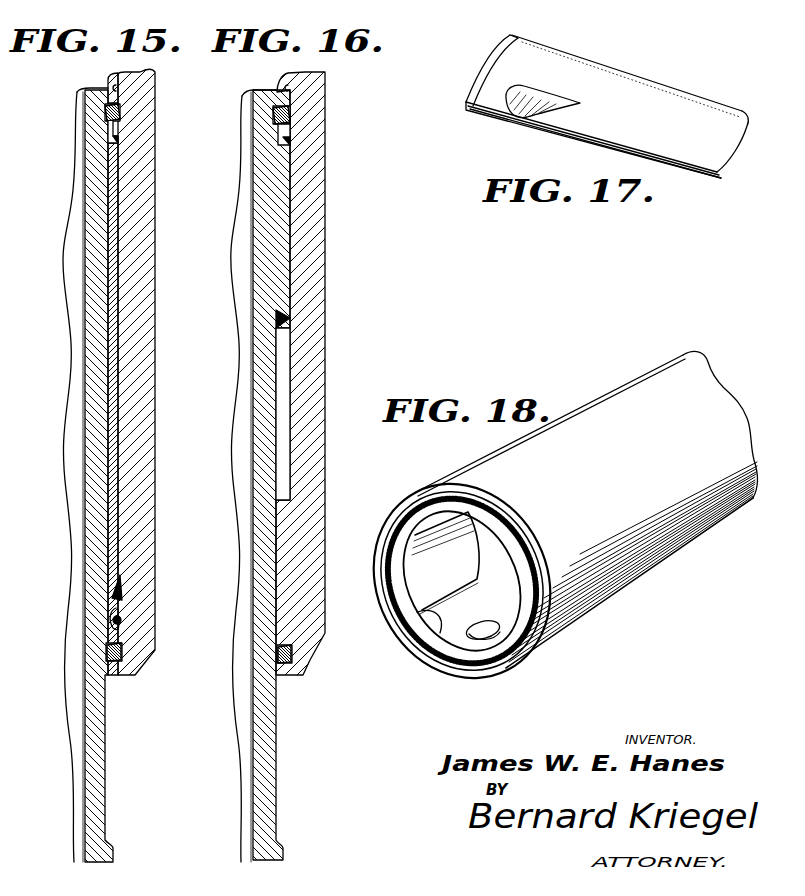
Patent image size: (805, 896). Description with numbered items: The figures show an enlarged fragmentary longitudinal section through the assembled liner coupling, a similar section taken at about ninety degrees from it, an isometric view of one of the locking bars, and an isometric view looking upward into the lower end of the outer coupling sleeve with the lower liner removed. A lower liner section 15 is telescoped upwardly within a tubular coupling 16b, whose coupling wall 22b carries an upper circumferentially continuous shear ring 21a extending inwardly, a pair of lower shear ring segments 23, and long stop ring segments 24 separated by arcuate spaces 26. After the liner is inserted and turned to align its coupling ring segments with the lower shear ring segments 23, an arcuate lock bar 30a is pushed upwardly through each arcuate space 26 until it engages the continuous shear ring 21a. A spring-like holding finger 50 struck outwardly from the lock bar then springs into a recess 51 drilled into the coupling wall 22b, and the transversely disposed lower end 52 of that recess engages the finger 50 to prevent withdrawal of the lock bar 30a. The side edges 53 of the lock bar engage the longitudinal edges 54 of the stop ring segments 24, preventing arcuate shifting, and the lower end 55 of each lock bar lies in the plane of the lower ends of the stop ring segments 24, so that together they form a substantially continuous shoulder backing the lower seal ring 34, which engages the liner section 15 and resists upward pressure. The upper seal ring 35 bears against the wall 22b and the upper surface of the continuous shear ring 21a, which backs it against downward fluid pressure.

In FIG. 15, the lower liner section 15 is at (100, 733).
In FIG. 16, the lower liner section 15 is at (276, 741).
In FIG. 15, the tubular coupling 16b is at (148, 266).
In FIG. 16, the tubular coupling 16b is at (318, 318).
In FIG. 18, the tubular coupling 16b is at (625, 395).
In FIG. 15, the upper circumferentially continuous shear ring 21a is at (112, 133).
In FIG. 16, the upper circumferentially continuous shear ring 21a is at (280, 133).
In FIG. 15, the coupling wall 22b is at (120, 89).
In FIG. 16, the coupling wall 22b is at (292, 90).
In FIG. 16, the lower shear ring segments 23 is at (278, 320).
In FIG. 16, the stop ring segments 24 is at (278, 541).
In FIG. 18, the stop ring segments 24 is at (425, 578).
In FIG. 16, the arcuate spaces 26 is at (292, 224).
In FIG. 15, the lock bar 30a is at (112, 383).
In FIG. 17, the lock bar 30a is at (582, 60).
In FIG. 15, the lower seal ring 34 is at (122, 657).
In FIG. 16, the lower seal ring 34 is at (292, 657).
In FIG. 18, the lower seal ring 34 is at (405, 619).
In FIG. 15, the upper seal ring 35 is at (121, 113).
In FIG. 16, the upper seal ring 35 is at (291, 114).
In FIG. 15, the spring-like holding finger 50 is at (121, 618).
In FIG. 17, the spring-like holding finger 50 is at (508, 113).
In FIG. 18, the spring-like holding finger 50 is at (483, 633).
In FIG. 15, the holding recess 51 is at (121, 590).
In FIG. 15, the lower end of recess 52 is at (108, 636).
In FIG. 17, the side edges of lock bar 53 is at (646, 75).
In FIG. 18, the longitudinal edges of stop ring segments 54 is at (438, 614).
In FIG. 15, the lower end of lock bar 55 is at (106, 656).
In FIG. 17, the lower end of lock bar 55 is at (500, 70).